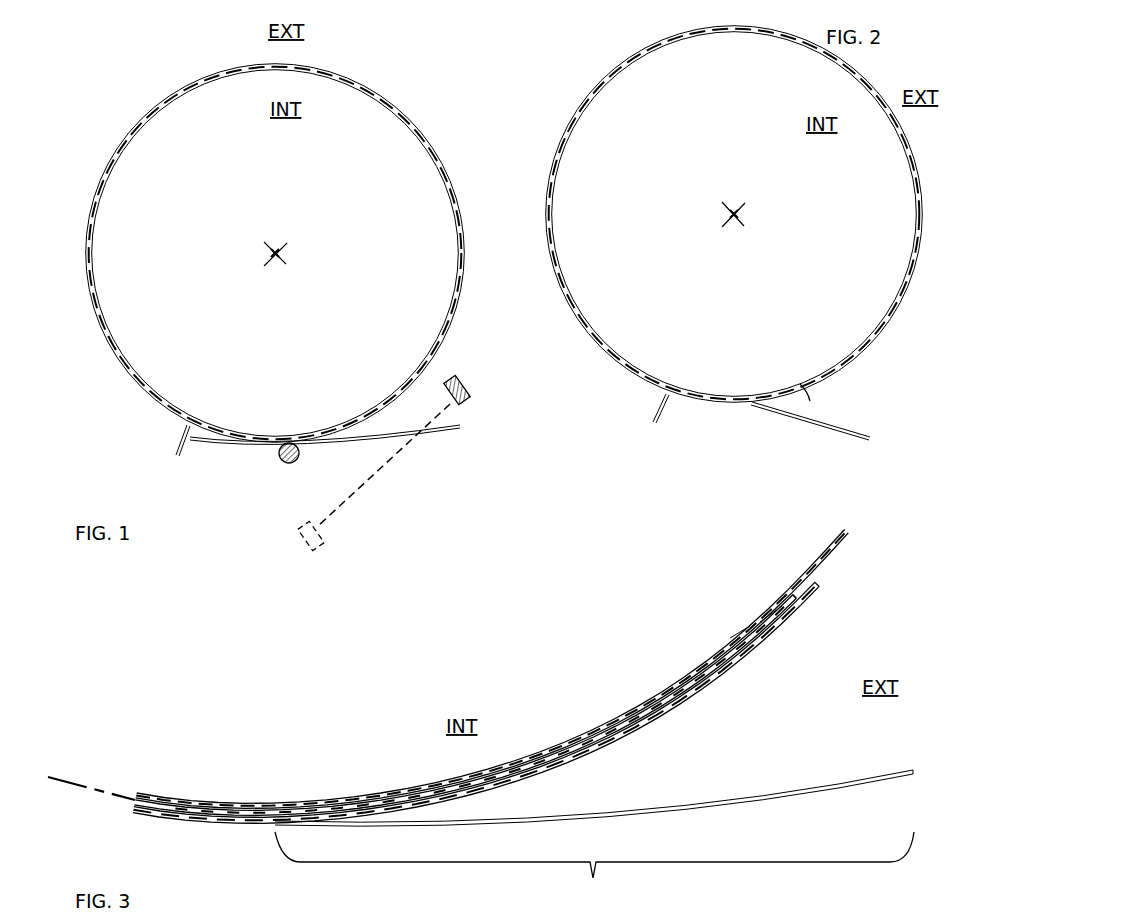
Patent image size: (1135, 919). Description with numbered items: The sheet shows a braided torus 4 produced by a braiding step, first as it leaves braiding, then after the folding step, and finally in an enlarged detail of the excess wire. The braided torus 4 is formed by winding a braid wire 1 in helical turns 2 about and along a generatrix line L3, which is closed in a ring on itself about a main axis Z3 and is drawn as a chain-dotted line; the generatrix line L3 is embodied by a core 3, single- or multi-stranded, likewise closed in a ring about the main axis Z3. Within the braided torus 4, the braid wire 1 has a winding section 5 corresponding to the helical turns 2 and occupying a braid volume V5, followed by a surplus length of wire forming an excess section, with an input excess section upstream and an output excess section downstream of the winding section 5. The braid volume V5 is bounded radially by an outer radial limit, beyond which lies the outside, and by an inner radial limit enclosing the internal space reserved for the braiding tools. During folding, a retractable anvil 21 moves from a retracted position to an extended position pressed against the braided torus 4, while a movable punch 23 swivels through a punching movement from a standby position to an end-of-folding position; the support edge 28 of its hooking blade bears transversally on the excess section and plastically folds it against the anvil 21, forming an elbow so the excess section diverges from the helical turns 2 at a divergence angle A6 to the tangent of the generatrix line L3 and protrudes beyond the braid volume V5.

In FIG. 1, the braid wire 1 is at (276, 440).
In FIG. 3, the braid wire 1 is at (616, 722).
In FIG. 3, the helical turns 2 is at (778, 604).
In FIG. 1, the core 3 is at (205, 78).
In FIG. 2, the core 3 is at (620, 66).
In FIG. 3, the core 3 is at (838, 556).
In FIG. 1, the braided torus 4 is at (108, 78).
In FIG. 2, the braided torus 4 is at (556, 92).
In FIG. 3, the braided torus 4 is at (258, 712).
In FIG. 1, the winding section 5 is at (246, 430).
In FIG. 3, the winding section 5 is at (172, 802).
In FIG. 1, the retractable anvil 21 is at (288, 464).
In FIG. 1, the movable punch 23 is at (462, 380).
In FIG. 1, the support edge 28 is at (462, 406).
In FIG. 2, the divergence angle A6 is at (806, 396).
In FIG. 3, the generatrix line L3 is at (72, 778).
In FIG. 1, the main axis Z3 is at (276, 250).
In FIG. 2, the main axis Z3 is at (733, 212).
In FIG. 3, the braid volume V5 is at (204, 803).